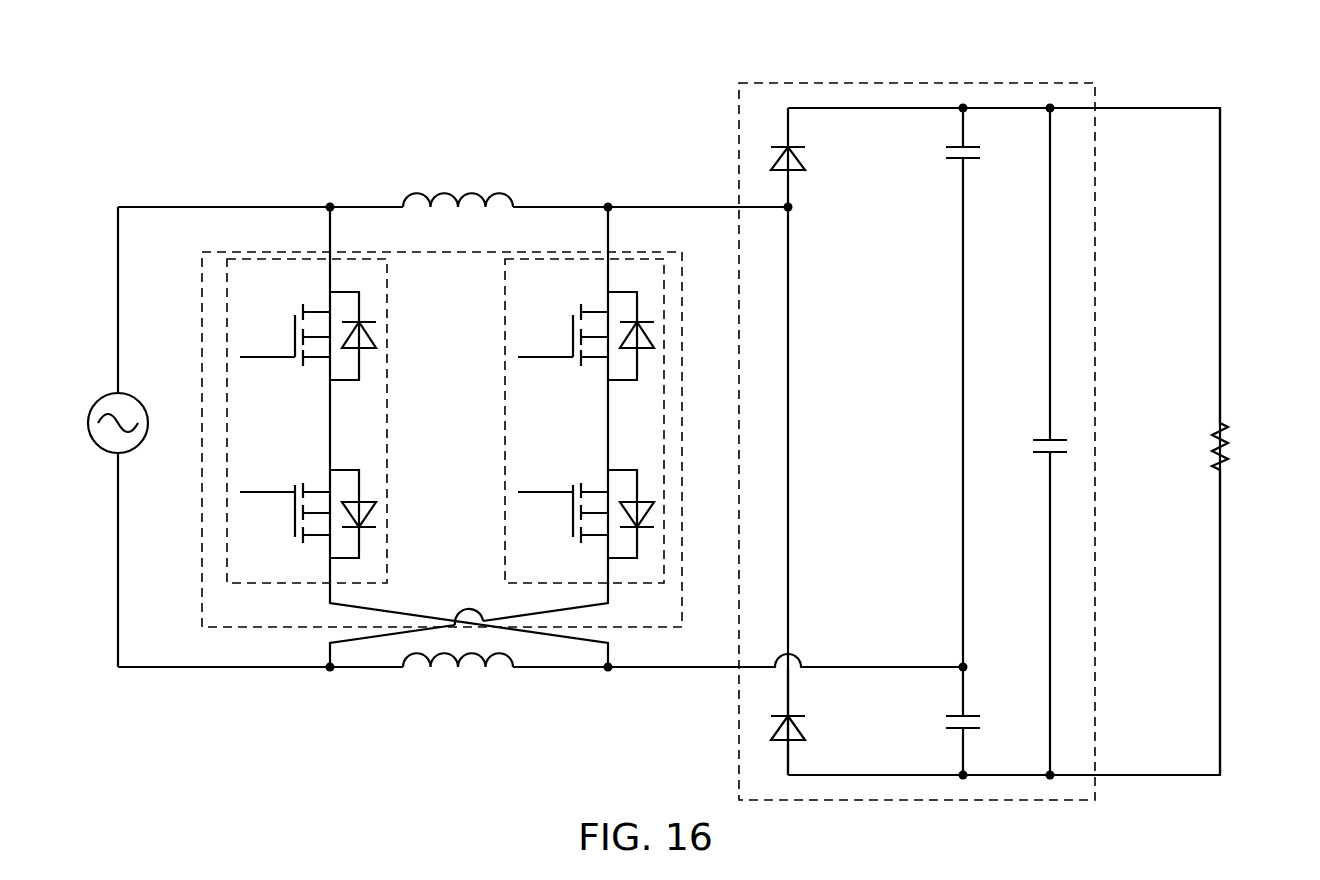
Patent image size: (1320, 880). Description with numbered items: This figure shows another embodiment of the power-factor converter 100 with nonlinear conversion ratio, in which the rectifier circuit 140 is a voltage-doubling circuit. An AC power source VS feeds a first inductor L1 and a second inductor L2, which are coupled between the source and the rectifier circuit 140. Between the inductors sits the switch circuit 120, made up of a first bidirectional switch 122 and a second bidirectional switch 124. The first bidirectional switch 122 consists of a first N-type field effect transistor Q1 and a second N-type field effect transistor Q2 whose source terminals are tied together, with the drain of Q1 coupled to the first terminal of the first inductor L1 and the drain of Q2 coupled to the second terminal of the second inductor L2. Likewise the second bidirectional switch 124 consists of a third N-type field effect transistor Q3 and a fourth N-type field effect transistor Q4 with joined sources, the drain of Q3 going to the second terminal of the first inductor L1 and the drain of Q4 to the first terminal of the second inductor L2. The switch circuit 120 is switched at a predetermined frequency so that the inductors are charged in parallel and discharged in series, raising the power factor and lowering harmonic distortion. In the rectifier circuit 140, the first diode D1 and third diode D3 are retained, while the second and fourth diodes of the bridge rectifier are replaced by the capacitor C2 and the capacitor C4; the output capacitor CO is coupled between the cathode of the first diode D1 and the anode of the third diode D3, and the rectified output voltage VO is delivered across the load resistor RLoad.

The power-factor converter with nonlinear conversion ratio 100 is at (1236, 96).
The switch circuit 120 is at (637, 252).
The first bidirectional switch 122 is at (390, 283).
The second bidirectional switch 124 is at (502, 341).
The rectifier circuit 140 is at (766, 83).
The AC power source VS is at (96, 437).
The first inductor L1 is at (470, 187).
The second inductor L2 is at (470, 670).
The first N-type field effect transistor Q1 is at (312, 292).
The second N-type field effect transistor Q2 is at (312, 470).
The third N-type field effect transistor Q3 is at (590, 292).
The fourth N-type field effect transistor Q4 is at (590, 470).
The first diode D1 is at (795, 147).
The third diode D3 is at (795, 716).
The capacitor C2 is at (970, 147).
The capacitor C4 is at (970, 716).
The capacitor CO is at (1043, 440).
The load resistor RLoad is at (1208, 445).
The output voltage VO is at (1262, 448).